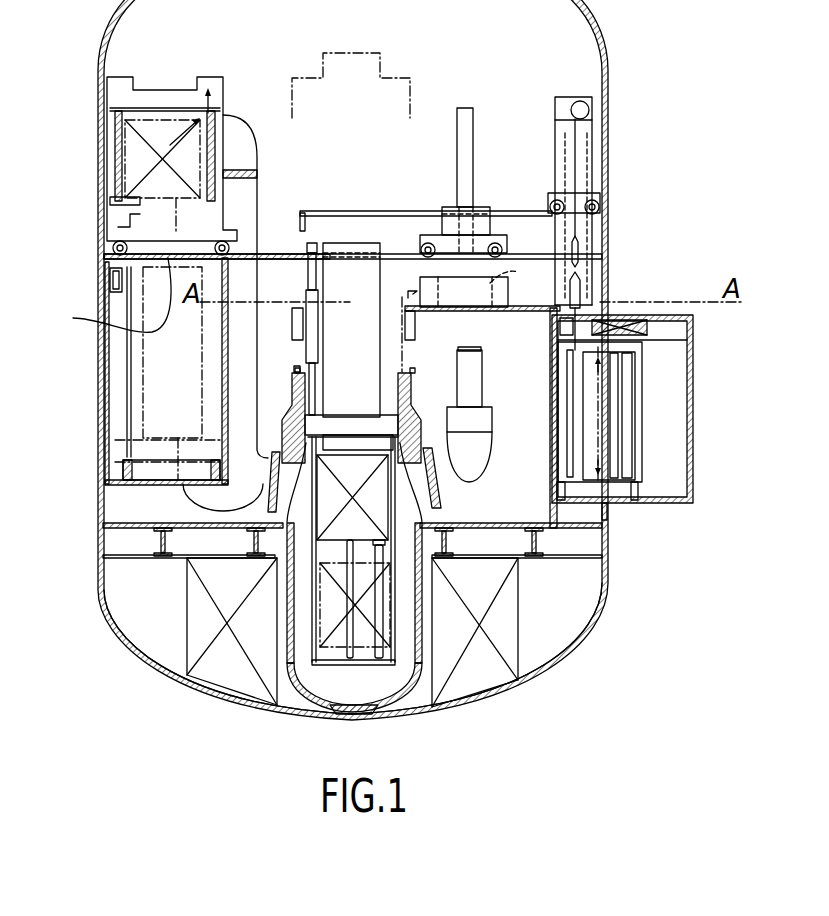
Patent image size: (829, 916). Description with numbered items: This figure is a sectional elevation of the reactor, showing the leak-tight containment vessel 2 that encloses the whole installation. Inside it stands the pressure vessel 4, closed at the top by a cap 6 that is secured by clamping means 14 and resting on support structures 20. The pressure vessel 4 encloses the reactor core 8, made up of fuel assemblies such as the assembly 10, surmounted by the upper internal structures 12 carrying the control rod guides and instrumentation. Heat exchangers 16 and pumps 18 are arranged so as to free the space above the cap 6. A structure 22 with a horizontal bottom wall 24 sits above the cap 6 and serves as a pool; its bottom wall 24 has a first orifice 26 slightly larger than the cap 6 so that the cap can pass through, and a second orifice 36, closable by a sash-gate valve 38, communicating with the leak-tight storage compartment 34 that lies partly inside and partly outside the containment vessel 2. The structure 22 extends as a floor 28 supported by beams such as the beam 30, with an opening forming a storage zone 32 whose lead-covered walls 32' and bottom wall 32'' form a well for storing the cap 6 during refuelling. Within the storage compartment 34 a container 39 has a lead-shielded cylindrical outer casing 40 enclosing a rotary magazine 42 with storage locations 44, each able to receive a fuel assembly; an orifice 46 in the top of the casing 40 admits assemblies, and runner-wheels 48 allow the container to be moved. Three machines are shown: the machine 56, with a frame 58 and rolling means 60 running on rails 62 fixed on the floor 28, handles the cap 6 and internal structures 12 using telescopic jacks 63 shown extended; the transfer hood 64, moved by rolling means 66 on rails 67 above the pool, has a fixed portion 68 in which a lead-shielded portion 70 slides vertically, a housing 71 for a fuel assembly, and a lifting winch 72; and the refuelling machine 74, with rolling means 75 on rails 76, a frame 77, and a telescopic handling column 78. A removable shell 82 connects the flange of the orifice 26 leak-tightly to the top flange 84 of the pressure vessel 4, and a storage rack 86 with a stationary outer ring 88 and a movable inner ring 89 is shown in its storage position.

The containment vessel 2 is at (590, 12).
The pressure vessel 4 is at (314, 700).
The cap 6 is at (357, 425).
The reactor core 8 is at (323, 580).
The fuel assembly 10 is at (350, 628).
The upper internal structures 12 is at (363, 481).
The clamping means 14 is at (483, 378).
The pumps 18 is at (473, 457).
The heat exchangers 16 is at (182, 498).
The support structures 20 is at (547, 545).
The structure 22 is at (529, 299).
The bottom wall 24 is at (497, 313).
The first orifice 26 is at (409, 296).
The floor 28 is at (286, 253).
The beam 30 is at (110, 297).
The storage zone 32 is at (78, 358).
The walls 32' is at (80, 391).
The bottom wall 32'' is at (130, 446).
The storage compartment 34 is at (712, 462).
The second orifice 36 is at (610, 306).
The sash-gate valve 38 is at (651, 330).
The container 39 is at (650, 433).
The outer casing 40 is at (643, 368).
The magazine 42 is at (617, 506).
The storage locations 44 is at (623, 395).
The orifice 46 is at (565, 378).
The runner-wheels 48 is at (651, 490).
The machine 56 is at (150, 62).
The frame 58 is at (118, 224).
The rolling means 60 is at (111, 249).
The rails 62 is at (133, 371).
The telescopic jacks 63 is at (310, 347).
The transfer hood 64 is at (550, 109).
The rolling means 66 is at (601, 196).
The rails 67 is at (345, 211).
The portion 68 is at (556, 138).
The lead-shielded portion 70 is at (604, 226).
The housing 71 is at (590, 288).
The lifting winch 72 is at (579, 240).
The refuelling machine 74 is at (453, 182).
The rolling means 75 is at (428, 243).
The rails 76 is at (517, 253).
The frame 77 is at (477, 208).
The handling column 78 is at (458, 110).
The removable shell 82 is at (403, 349).
The top flange 84 is at (441, 498).
The storage rack 86 is at (405, 328).
The stationary outer ring 88 is at (477, 302).
The inner ring 89 is at (523, 278).